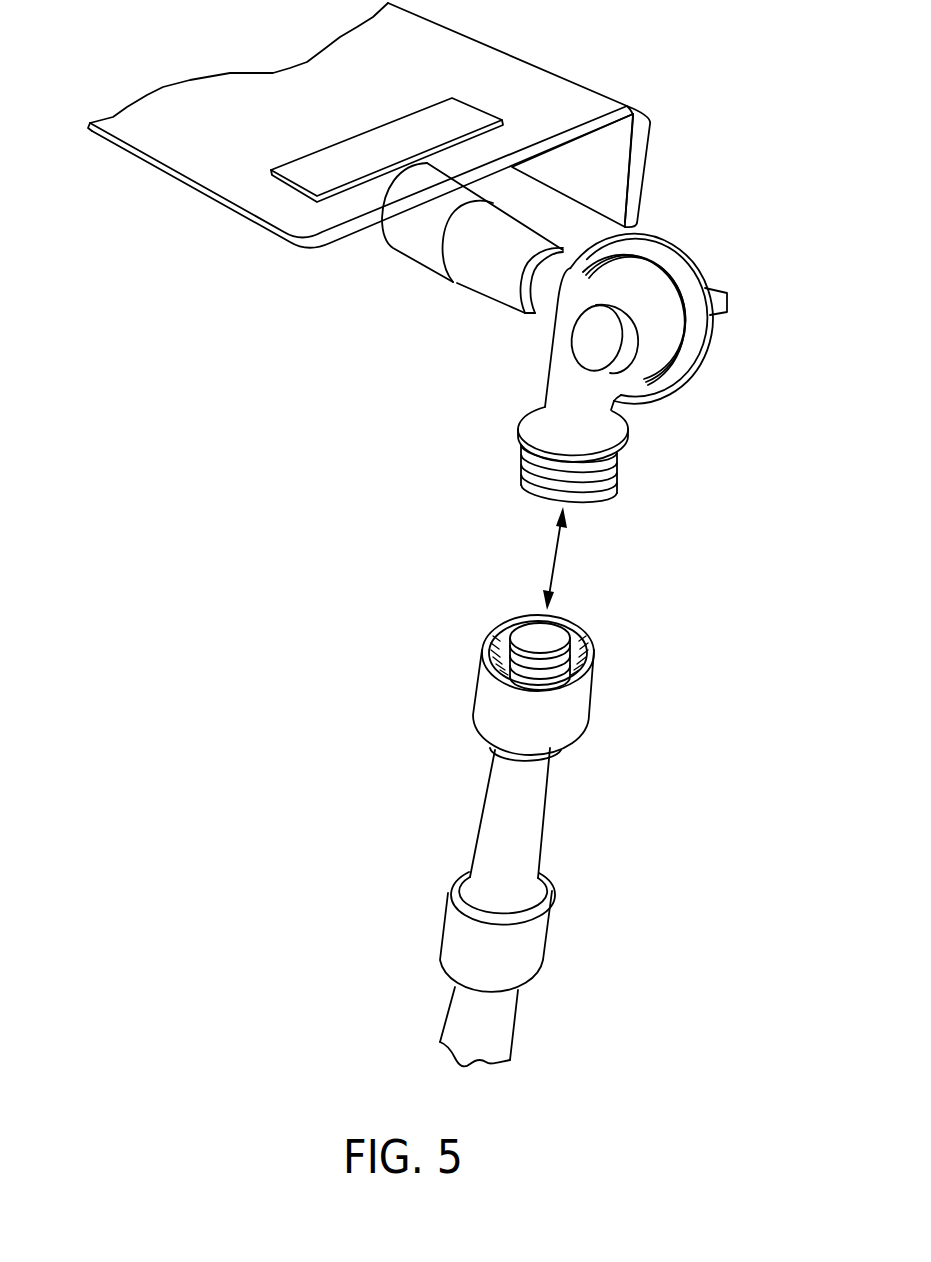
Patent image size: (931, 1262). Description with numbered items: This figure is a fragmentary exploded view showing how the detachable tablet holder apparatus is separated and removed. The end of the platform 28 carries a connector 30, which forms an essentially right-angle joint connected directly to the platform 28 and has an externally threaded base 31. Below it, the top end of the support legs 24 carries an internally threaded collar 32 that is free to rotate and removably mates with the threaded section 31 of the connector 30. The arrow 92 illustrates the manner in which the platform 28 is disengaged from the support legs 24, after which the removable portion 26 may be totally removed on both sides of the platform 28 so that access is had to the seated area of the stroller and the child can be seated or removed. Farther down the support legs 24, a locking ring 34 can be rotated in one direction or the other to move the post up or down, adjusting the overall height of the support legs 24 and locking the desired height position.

The support legs 24 is at (402, 910).
The removable portion 26 is at (228, 231).
The platform 28 is at (205, 90).
The connector 30 is at (692, 260).
The externally threaded base 31 is at (613, 481).
The internally threaded collar 32 is at (490, 692).
The locking ring 34 is at (533, 945).
The arrow 92 is at (557, 560).